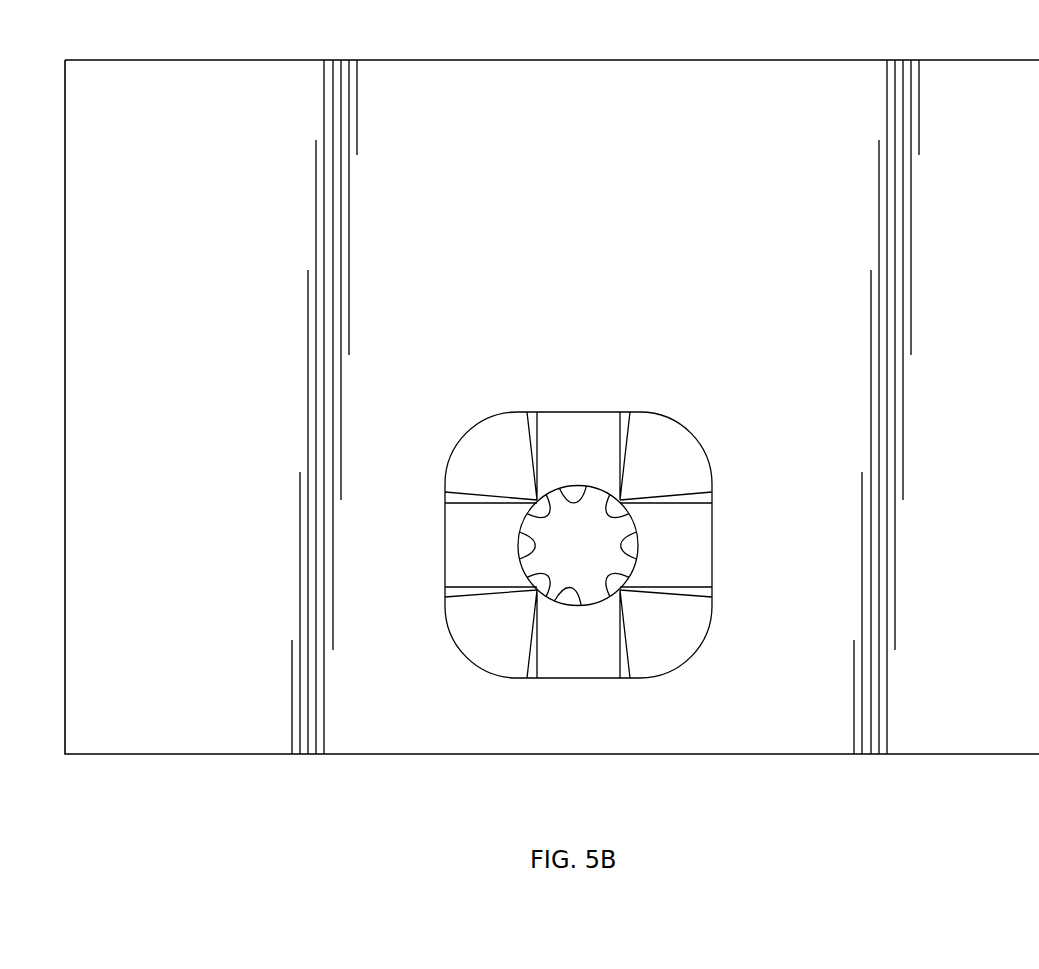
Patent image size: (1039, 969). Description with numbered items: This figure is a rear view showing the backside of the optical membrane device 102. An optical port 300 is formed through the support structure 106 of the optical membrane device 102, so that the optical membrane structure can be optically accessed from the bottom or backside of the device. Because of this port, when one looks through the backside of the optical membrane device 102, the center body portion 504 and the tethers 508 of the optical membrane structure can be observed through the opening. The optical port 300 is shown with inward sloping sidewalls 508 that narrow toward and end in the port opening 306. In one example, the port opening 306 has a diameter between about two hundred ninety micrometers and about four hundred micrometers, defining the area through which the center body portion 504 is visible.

The optical membrane device 102 is at (650, 60).
The support structure 106 is at (594, 299).
The optical port 300 is at (692, 428).
The center body portion 504 is at (598, 508).
The tethers 508 is at (467, 553).
The port opening 306 is at (538, 592).